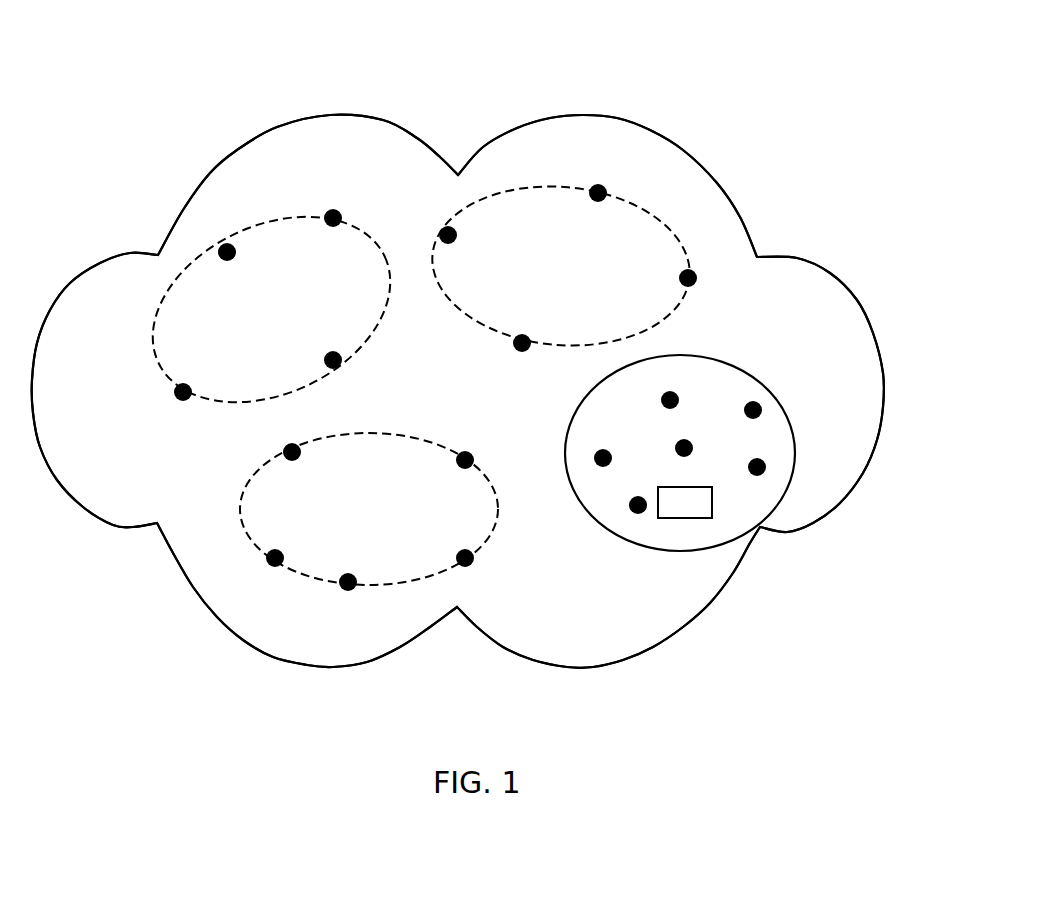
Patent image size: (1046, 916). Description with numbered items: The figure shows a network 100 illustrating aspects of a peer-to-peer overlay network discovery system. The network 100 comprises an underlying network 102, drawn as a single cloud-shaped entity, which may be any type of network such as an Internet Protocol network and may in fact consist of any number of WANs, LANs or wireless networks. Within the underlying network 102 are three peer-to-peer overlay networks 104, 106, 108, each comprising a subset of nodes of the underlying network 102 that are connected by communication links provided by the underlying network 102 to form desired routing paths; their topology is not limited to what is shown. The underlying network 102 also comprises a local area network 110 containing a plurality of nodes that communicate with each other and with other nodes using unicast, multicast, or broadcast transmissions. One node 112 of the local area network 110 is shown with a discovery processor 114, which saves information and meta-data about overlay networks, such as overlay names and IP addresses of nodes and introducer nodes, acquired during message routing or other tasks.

The network 100 is at (659, 50).
The underlying network 102 is at (239, 149).
The peer-to-peer overlay network 104 is at (301, 382).
The peer-to-peer overlay network 106 is at (643, 322).
The peer-to-peer overlay network 108 is at (427, 577).
The local area network 110 is at (746, 342).
The node 112 is at (637, 514).
The discovery processor (DP) 114 is at (686, 519).